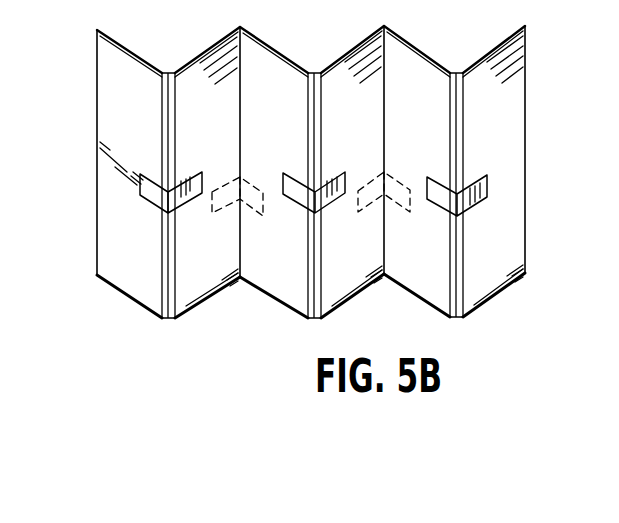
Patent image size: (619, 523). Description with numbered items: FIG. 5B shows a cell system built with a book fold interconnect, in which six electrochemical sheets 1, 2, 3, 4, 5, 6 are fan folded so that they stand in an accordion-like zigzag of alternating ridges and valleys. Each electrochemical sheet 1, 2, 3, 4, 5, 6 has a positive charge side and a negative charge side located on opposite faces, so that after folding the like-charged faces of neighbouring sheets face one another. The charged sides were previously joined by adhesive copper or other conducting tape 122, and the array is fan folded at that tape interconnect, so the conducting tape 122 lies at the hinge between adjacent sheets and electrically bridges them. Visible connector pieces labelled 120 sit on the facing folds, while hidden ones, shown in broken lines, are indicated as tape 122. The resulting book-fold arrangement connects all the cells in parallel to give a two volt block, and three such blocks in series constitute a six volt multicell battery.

The electrochemical sheet 1 is at (143, 141).
The electrochemical sheet 2 is at (213, 141).
The electrochemical sheet 3 is at (279, 141).
The electrochemical sheet 4 is at (358, 141).
The electrochemical sheet 5 is at (424, 141).
The electrochemical sheet 6 is at (499, 141).
The clip 120 is at (145, 198).
The conducting tape 122 is at (358, 196).